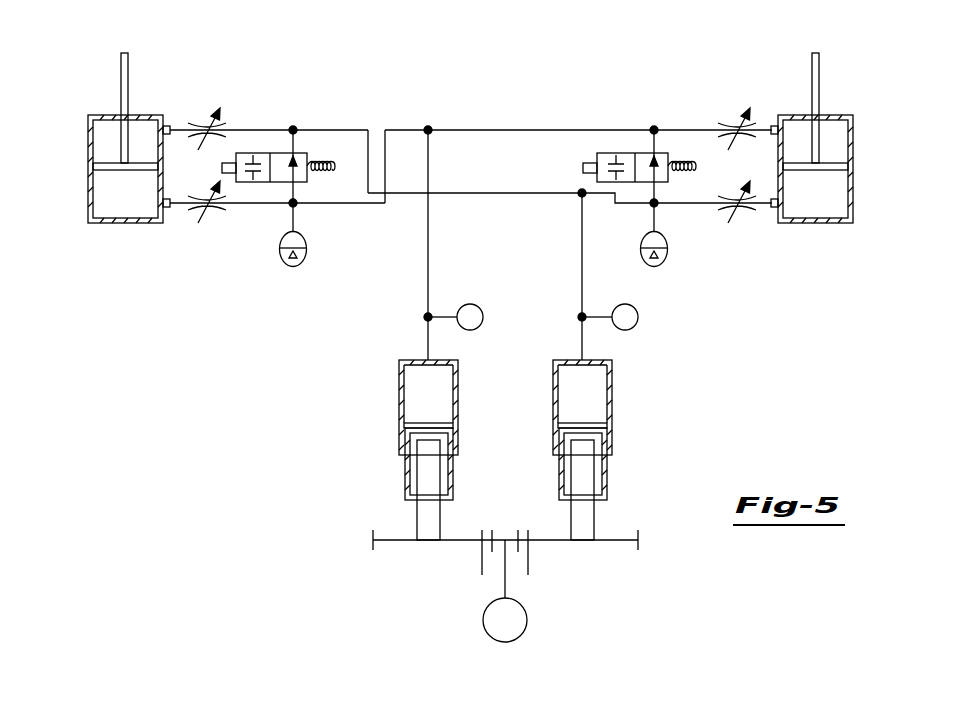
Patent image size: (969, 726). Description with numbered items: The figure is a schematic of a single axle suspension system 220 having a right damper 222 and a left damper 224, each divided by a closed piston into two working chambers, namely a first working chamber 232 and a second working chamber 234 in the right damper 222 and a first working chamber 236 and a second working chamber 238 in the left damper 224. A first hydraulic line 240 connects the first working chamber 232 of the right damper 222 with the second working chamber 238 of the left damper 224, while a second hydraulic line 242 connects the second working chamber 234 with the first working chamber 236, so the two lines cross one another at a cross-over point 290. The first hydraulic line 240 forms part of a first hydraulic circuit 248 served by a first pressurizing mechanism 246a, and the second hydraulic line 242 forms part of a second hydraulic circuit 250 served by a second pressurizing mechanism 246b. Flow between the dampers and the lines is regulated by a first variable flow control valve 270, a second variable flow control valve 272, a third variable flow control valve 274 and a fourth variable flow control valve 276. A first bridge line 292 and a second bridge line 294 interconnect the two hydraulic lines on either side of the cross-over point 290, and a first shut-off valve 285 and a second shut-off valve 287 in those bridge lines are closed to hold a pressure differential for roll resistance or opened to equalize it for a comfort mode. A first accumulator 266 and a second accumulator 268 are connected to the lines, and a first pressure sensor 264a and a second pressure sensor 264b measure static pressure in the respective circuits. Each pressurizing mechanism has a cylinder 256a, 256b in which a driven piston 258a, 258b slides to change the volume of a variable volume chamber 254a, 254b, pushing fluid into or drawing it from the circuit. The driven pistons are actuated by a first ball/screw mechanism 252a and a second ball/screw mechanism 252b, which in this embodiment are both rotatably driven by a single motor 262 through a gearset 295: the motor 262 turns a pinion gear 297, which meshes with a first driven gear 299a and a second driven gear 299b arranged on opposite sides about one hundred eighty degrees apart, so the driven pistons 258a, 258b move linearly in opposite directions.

The single axle suspension system 220 is at (244, 411).
The right damper 222 is at (856, 109).
The left damper 224 is at (82, 97).
The first working chamber of right damper 232 is at (797, 130).
The second working chamber of right damper 234 is at (832, 205).
The first working chamber of left damper 236 is at (145, 130).
The second working chamber of left damper 238 is at (110, 205).
The first hydraulic line 240 is at (572, 130).
The second hydraulic line 242 is at (547, 195).
The first pressurizing mechanism 246a is at (468, 440).
The second pressurizing mechanism 246b is at (545, 423).
The first hydraulic circuit 248 is at (535, 128).
The second hydraulic circuit 250 is at (515, 195).
The first ball/screw mechanism 252a is at (430, 507).
The second ball/screw mechanism 252b is at (587, 507).
The first variable volume chamber 254a is at (415, 397).
The second variable volume chamber 254b is at (594, 397).
The first cylinder 256a is at (400, 378).
The second cylinder 256b is at (612, 378).
The first driven piston 258a is at (404, 463).
The second driven piston 258b is at (607, 463).
The motor 262 is at (527, 620).
The first pressure sensor 264a is at (480, 325).
The second pressure sensor 264b is at (635, 325).
The first accumulator 266 is at (300, 263).
The second accumulator 268 is at (661, 263).
The first variable flow control valve 270 is at (730, 120).
The second variable flow control valve 272 is at (218, 217).
The third variable flow control valve 274 is at (745, 213).
The fourth variable flow control valve 276 is at (200, 120).
The first shut-off valve 285 is at (640, 152).
The second shut-off valve 287 is at (300, 152).
The cross-over point 290 is at (400, 197).
The first bridge line 292 is at (650, 195).
The second bridge line 294 is at (296, 190).
The gearset 295 is at (387, 644).
The pinion gear 297 is at (511, 545).
The first driven gear 299a is at (390, 541).
The second driven gear 299b is at (620, 541).